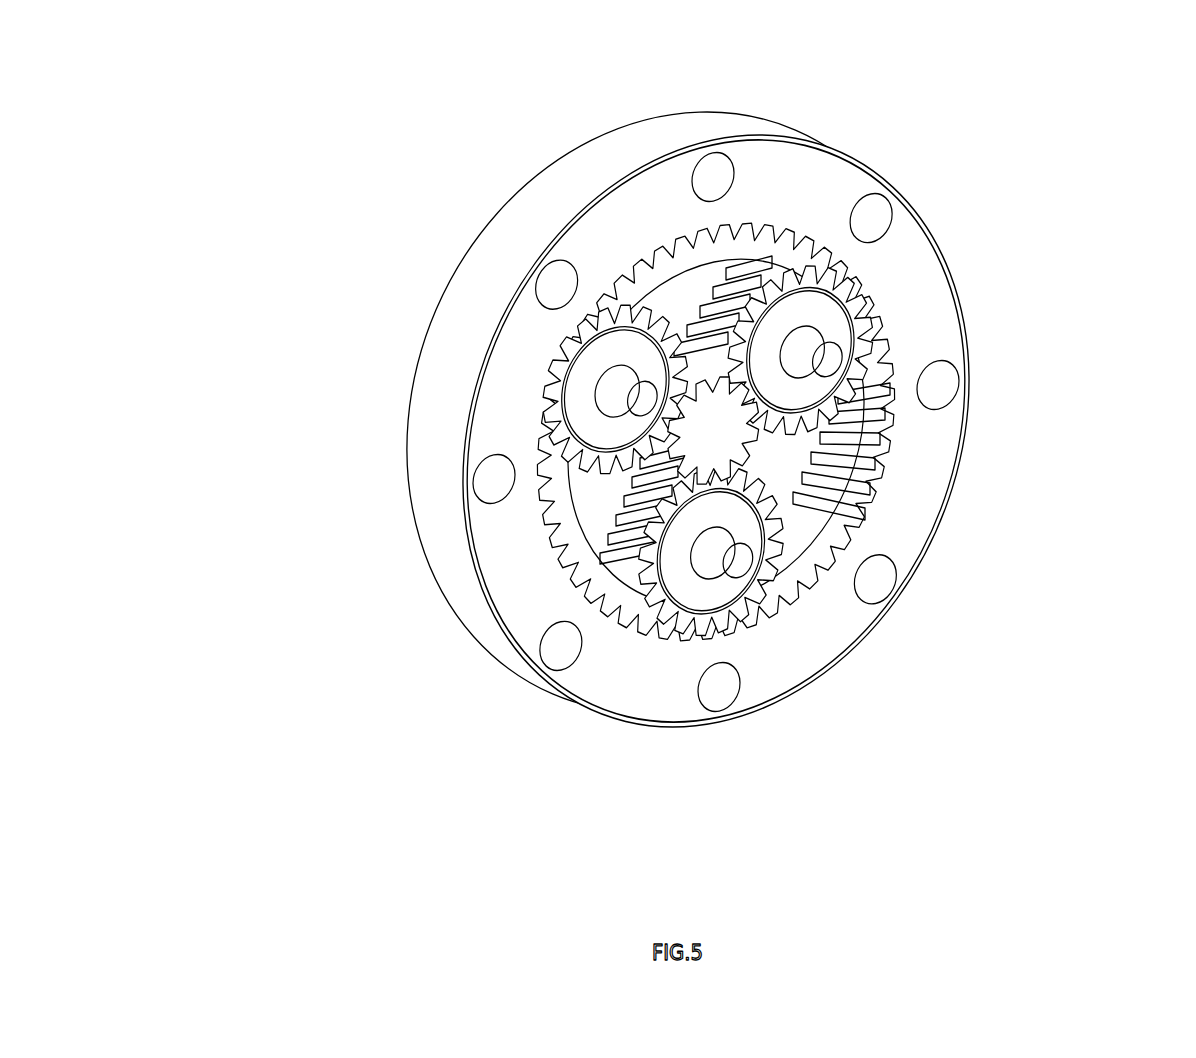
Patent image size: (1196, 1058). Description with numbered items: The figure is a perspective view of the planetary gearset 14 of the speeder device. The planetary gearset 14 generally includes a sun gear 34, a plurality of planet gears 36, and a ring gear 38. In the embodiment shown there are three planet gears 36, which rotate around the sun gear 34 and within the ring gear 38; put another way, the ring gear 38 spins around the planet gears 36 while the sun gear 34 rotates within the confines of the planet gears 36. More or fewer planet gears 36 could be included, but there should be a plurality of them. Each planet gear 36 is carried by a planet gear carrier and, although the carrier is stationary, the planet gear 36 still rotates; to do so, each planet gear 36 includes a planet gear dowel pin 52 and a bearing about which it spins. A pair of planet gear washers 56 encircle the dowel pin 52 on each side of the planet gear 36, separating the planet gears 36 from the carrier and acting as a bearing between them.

The planetary gearset 14 is at (306, 172).
The sun gear 34 is at (845, 520).
The planet gears 36 is at (573, 447).
The ring gear 38 is at (910, 273).
The planet gear dowel pin 52 is at (633, 388).
The planet gear washers 56 is at (583, 383).